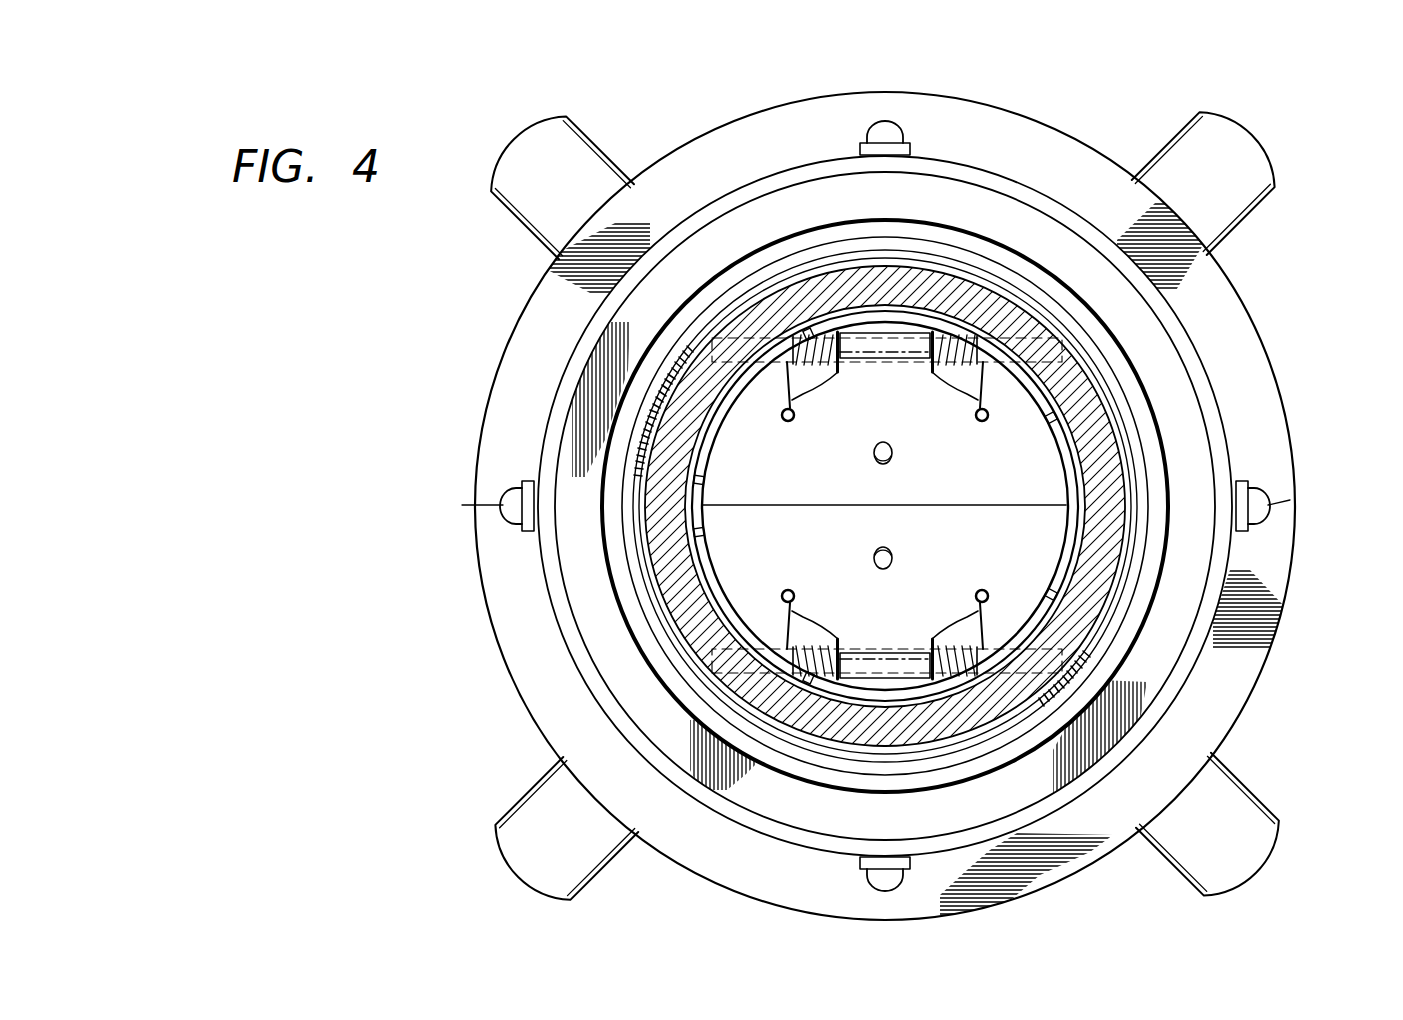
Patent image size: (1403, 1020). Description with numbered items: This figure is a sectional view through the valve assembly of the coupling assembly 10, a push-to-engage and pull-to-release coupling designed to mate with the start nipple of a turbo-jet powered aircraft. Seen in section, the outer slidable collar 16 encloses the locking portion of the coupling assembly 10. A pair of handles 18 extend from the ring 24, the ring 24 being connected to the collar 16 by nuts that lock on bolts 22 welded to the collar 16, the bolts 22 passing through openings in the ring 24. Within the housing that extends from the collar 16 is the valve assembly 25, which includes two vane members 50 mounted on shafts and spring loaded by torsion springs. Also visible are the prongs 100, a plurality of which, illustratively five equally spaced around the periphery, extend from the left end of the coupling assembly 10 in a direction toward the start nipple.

The coupling assembly 10 is at (1292, 320).
The outer slidable collar 16 is at (1180, 710).
The handles 18 is at (528, 155).
The bolts 22 is at (897, 135).
The ring 24 is at (1303, 556).
The valve assembly 25 is at (1038, 453).
The vane members 50 is at (802, 486).
The prongs 100 is at (710, 568).